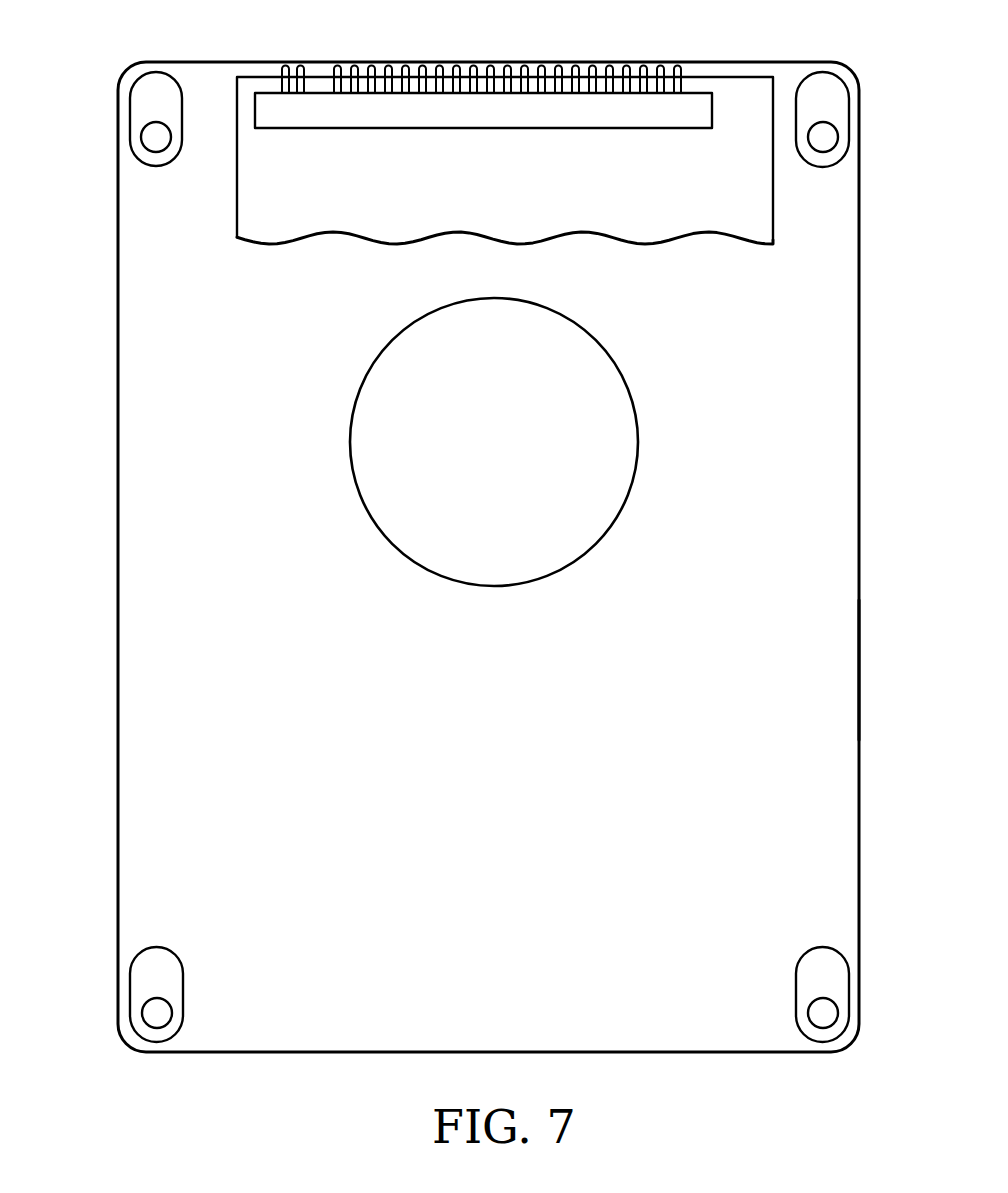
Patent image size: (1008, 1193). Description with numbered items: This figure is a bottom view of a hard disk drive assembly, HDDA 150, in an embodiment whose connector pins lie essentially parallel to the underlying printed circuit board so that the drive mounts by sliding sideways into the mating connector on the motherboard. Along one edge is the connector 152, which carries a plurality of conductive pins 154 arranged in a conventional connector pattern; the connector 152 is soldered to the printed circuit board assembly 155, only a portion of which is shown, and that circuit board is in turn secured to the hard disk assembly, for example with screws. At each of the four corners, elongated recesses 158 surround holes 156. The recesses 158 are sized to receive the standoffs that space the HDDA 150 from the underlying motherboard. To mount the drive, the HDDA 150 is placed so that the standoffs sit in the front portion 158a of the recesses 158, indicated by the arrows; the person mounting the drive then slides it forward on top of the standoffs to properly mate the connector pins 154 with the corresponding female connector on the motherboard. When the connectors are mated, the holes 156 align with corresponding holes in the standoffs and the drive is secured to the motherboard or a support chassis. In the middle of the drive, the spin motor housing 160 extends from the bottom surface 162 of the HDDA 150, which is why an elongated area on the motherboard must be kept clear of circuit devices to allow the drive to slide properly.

The hard disk drive assembly 150 is at (432, 783).
The connector 152 is at (698, 103).
The conductive pins 154 is at (388, 63).
The printed circuit board assembly 155 is at (260, 200).
The holes 156 is at (153, 137).
The elongated recesses 158 is at (153, 90).
The front portion of recesses 158a is at (197, 86).
The spin motor housing 160 is at (563, 352).
The bottom surface 162 is at (838, 667).